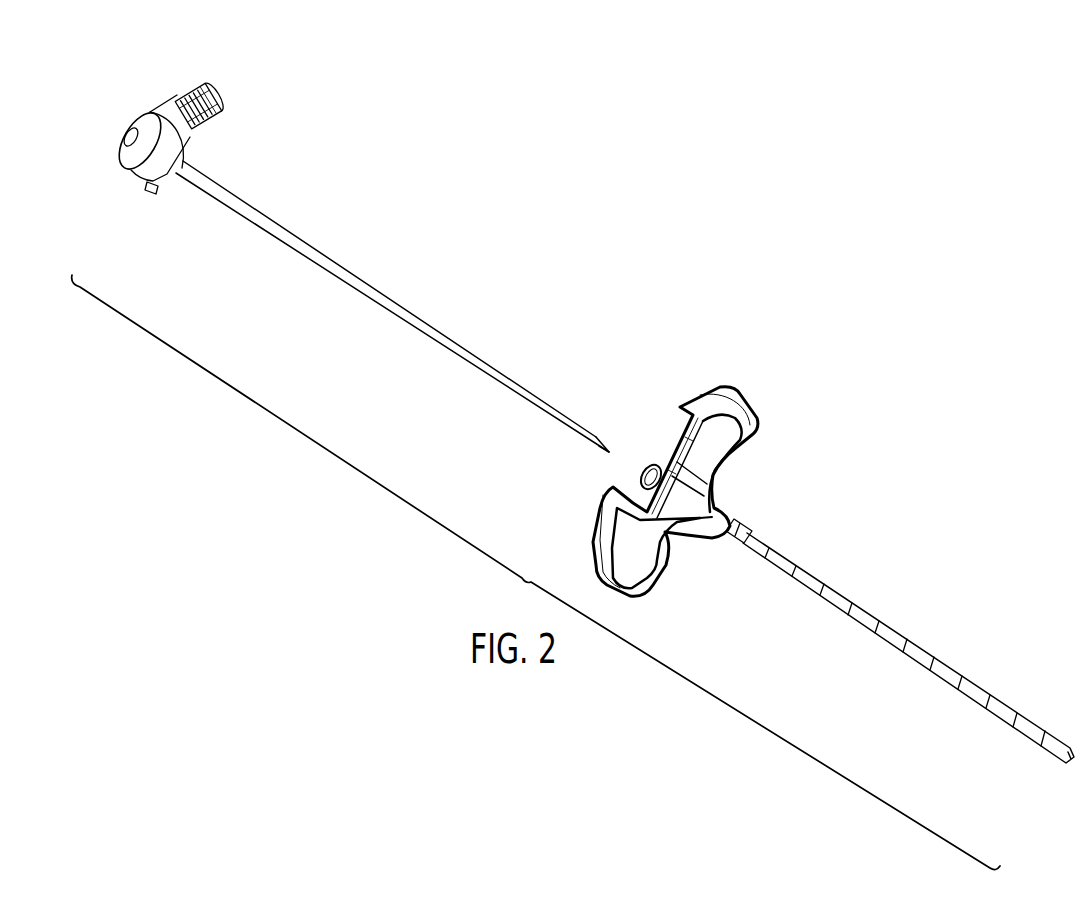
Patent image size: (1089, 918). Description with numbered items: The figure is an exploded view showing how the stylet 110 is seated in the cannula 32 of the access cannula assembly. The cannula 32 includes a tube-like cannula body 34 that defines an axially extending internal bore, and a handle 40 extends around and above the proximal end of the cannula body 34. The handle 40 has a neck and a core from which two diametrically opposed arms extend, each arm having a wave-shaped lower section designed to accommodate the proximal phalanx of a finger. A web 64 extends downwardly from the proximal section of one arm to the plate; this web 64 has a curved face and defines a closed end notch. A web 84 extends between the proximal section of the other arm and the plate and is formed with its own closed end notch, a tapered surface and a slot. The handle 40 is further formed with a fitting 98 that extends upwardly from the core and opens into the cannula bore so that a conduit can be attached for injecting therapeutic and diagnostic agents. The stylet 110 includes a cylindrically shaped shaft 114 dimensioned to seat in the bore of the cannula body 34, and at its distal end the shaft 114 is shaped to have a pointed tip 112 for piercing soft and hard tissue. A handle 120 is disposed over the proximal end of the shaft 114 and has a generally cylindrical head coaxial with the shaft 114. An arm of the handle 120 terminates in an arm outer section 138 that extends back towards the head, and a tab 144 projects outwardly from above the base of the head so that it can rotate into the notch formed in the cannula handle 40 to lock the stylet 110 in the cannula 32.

The cannula 32 is at (826, 570).
The cannula body 34 is at (970, 702).
The handle 40 is at (628, 599).
The web 64 is at (622, 503).
The web 84 is at (676, 416).
The fitting 98 is at (643, 466).
The stylet 110 is at (280, 180).
The pointed tip 112 is at (598, 450).
The shaft 114 is at (412, 328).
The handle 120 is at (112, 122).
The arm outer section 138 is at (203, 88).
The tab 144 is at (150, 192).